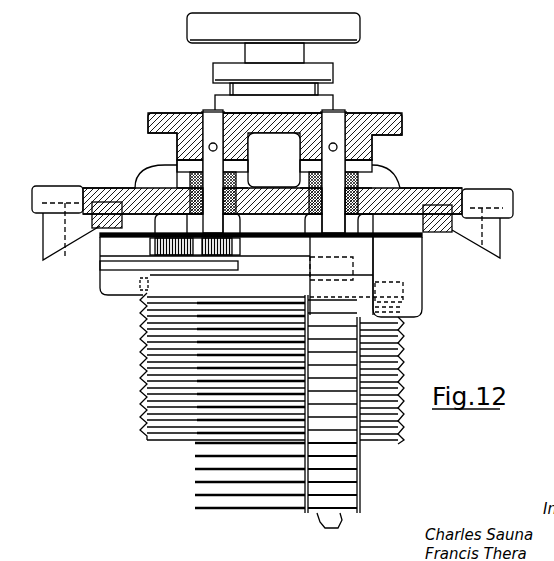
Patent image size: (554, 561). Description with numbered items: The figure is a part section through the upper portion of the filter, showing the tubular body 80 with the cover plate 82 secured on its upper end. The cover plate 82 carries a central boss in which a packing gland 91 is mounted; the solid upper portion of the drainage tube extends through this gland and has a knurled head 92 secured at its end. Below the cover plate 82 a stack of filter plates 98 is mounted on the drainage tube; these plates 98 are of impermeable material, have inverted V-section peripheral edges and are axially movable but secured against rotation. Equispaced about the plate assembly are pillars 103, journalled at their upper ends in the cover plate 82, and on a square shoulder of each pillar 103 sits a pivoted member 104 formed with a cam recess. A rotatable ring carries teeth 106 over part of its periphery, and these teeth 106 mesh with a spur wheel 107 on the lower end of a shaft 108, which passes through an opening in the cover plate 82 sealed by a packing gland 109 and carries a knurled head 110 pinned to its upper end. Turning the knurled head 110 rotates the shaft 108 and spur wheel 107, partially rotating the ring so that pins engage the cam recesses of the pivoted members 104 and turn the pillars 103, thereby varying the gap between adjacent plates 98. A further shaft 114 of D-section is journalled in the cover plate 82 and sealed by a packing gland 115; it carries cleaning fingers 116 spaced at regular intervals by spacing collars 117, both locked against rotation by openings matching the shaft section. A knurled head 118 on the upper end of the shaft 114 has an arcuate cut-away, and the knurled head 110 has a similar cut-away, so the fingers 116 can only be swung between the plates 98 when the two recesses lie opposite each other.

The tubular body 80 is at (473, 240).
The cover plate 82 is at (488, 198).
The packing gland 91 is at (325, 73).
The knurled head 92 is at (352, 25).
The filter plates 98 is at (140, 402).
The pillars 103 is at (128, 292).
The pivoted member 104 is at (137, 266).
The teeth 106 is at (150, 243).
The spur wheel 107 is at (235, 247).
The shaft 108 is at (212, 118).
The packing gland 109 is at (180, 185).
The knurled head 110 is at (165, 118).
The shaft 114 is at (338, 115).
The packing gland 115 is at (368, 193).
The cleaning fingers 116 is at (195, 482).
The spacing collars 117 is at (357, 482).
The knurled head 118 is at (402, 118).